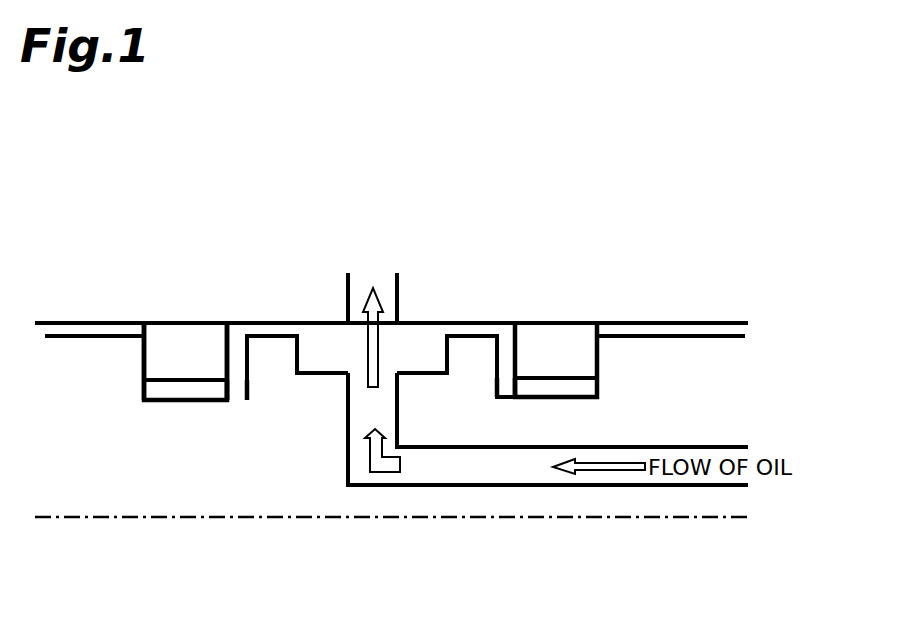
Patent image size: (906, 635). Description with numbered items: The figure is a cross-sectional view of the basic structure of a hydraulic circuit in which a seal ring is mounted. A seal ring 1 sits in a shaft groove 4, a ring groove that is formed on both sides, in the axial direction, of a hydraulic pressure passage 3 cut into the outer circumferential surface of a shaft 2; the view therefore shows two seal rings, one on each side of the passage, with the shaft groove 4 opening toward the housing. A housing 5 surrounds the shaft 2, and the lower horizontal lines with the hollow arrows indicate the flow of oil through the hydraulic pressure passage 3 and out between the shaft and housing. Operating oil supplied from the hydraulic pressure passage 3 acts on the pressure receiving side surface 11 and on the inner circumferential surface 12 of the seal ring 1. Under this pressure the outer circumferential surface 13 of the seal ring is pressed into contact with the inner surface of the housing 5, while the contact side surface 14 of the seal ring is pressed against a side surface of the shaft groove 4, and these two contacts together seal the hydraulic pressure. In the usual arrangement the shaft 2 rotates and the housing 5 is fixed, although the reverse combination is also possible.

The seal ring 1 is at (168, 343).
The shaft 2 is at (703, 358).
The hydraulic pressure passage 3 is at (398, 290).
The shaft groove 4 is at (232, 390).
The housing 5 is at (703, 302).
The pressure receiving side surface 11 is at (232, 362).
The inner circumferential surface 12 is at (190, 383).
The outer circumferential surface 13 is at (198, 321).
The contact side surface 14 is at (138, 366).